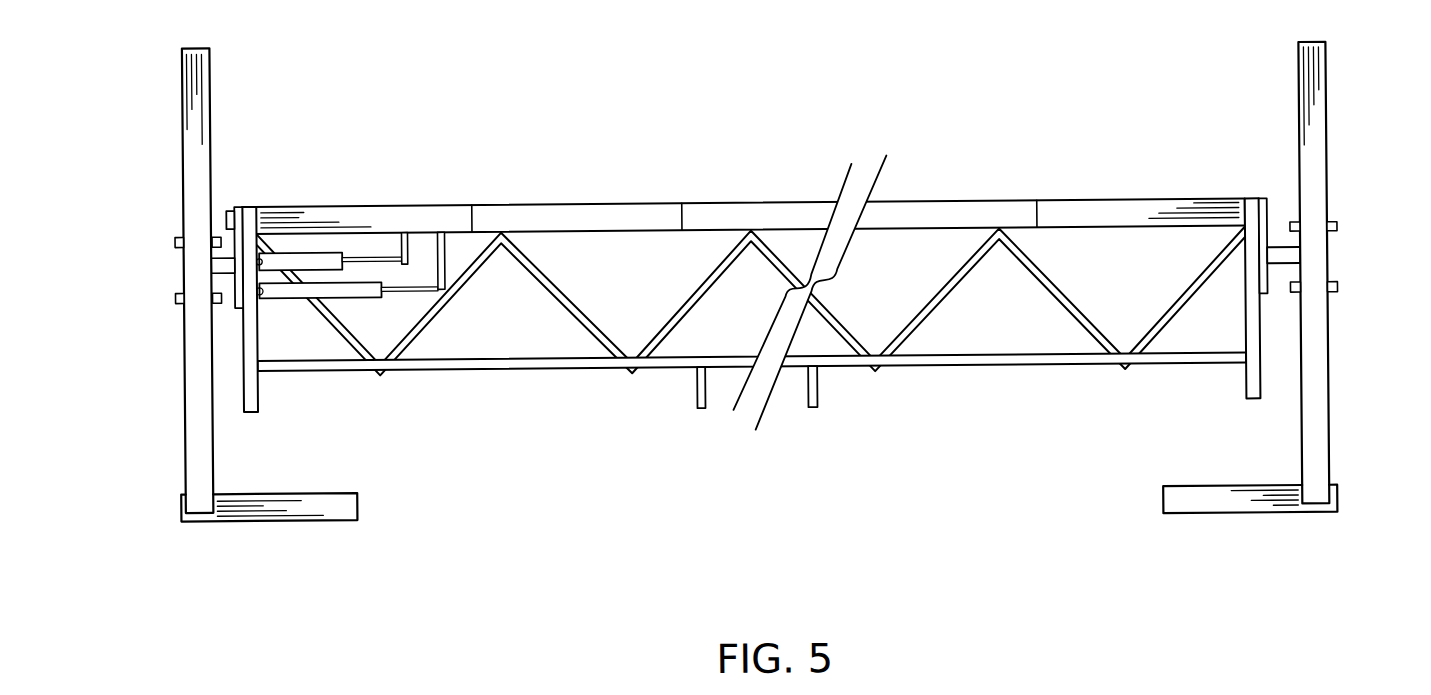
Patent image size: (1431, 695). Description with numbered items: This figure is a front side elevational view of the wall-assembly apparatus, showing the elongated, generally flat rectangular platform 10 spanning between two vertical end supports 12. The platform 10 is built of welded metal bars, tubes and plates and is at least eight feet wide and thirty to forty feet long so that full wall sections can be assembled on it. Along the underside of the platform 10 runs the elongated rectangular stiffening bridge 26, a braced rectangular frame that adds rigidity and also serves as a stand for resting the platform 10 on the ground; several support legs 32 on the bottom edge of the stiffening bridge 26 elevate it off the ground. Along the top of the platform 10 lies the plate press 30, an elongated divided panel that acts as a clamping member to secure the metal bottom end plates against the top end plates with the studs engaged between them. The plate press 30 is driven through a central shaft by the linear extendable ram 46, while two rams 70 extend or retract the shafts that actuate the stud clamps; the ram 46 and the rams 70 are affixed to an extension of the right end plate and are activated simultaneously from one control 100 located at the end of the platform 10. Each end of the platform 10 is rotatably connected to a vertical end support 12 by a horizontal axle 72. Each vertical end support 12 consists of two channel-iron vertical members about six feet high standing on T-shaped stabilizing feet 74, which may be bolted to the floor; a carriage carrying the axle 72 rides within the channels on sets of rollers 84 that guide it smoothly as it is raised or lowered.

The platform 10 is at (692, 172).
The vertical end supports 12 is at (1367, 421).
The stiffening bridge 26 is at (432, 367).
The plate press 30 is at (1090, 203).
The support legs 32 is at (705, 410).
The ram 46 is at (360, 287).
The rams 70 is at (320, 256).
The horizontal axles 72 is at (1283, 262).
The stabilizing feet 74 is at (1223, 589).
The rollers 84 is at (1340, 292).
The control 100 is at (232, 207).